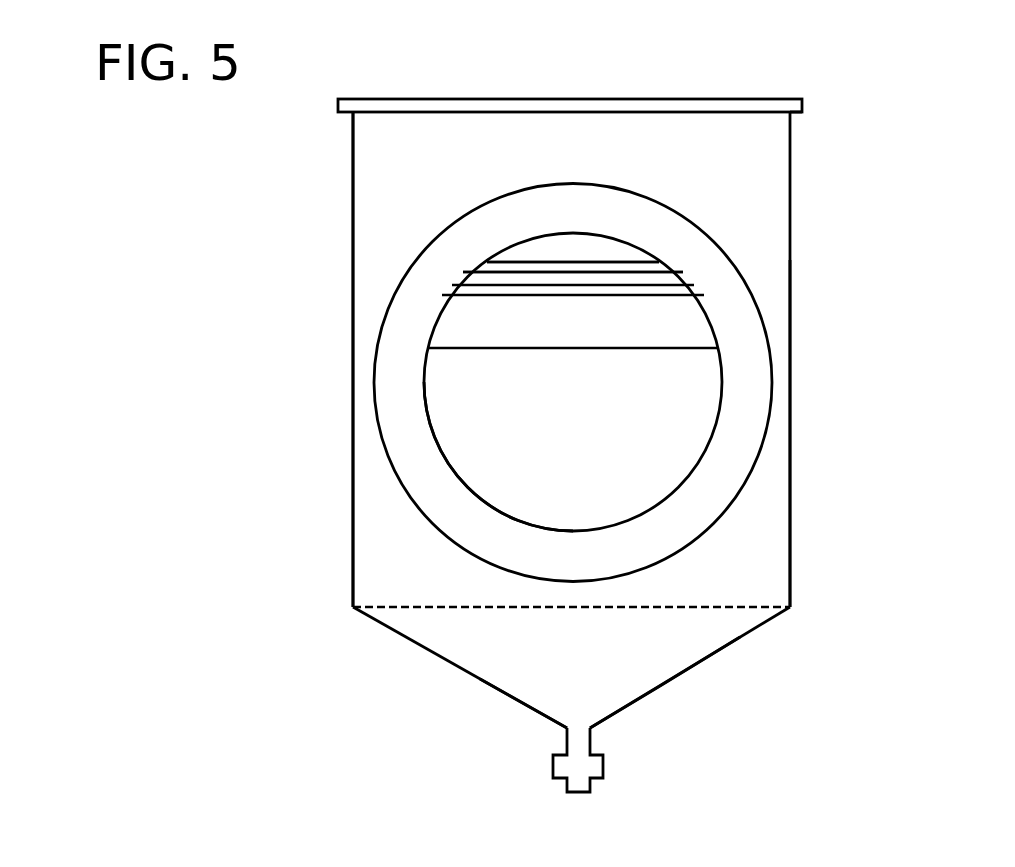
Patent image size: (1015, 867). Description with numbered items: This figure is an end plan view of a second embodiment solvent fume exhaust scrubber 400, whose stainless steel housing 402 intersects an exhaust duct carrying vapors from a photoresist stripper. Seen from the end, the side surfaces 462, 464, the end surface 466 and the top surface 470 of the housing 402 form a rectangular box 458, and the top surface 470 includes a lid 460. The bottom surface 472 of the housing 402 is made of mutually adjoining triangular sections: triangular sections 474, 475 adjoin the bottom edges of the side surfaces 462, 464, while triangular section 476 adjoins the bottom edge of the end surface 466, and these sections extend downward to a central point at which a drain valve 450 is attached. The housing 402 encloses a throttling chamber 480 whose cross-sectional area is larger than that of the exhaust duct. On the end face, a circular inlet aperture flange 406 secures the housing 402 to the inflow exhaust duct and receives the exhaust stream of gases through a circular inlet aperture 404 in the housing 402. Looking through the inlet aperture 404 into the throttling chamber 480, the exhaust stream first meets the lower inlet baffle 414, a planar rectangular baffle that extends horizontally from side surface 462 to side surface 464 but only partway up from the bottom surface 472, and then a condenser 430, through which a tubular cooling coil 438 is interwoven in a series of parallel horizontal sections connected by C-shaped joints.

The solvent fume exhaust scrubber 400 is at (860, 615).
The housing 402 is at (792, 417).
The circular inlet aperture 404 is at (488, 455).
The circular inlet aperture flange 406 is at (442, 280).
The lower inlet baffle 414 is at (603, 470).
The condenser 430 is at (563, 248).
The tubular cooling coil 438 is at (657, 262).
The drain valve 450 is at (592, 779).
The rectangular box 458 is at (363, 493).
The lid 460 is at (802, 113).
The side surface 462 is at (352, 215).
The side surface 464 is at (697, 303).
The end surface 466 is at (730, 165).
The top surface 470 is at (552, 107).
The bottom surface 472 is at (713, 657).
The triangular section 474 is at (450, 662).
The triangular section 475 is at (678, 672).
The triangular section 476 is at (593, 653).
The throttling chamber 480 is at (574, 406).